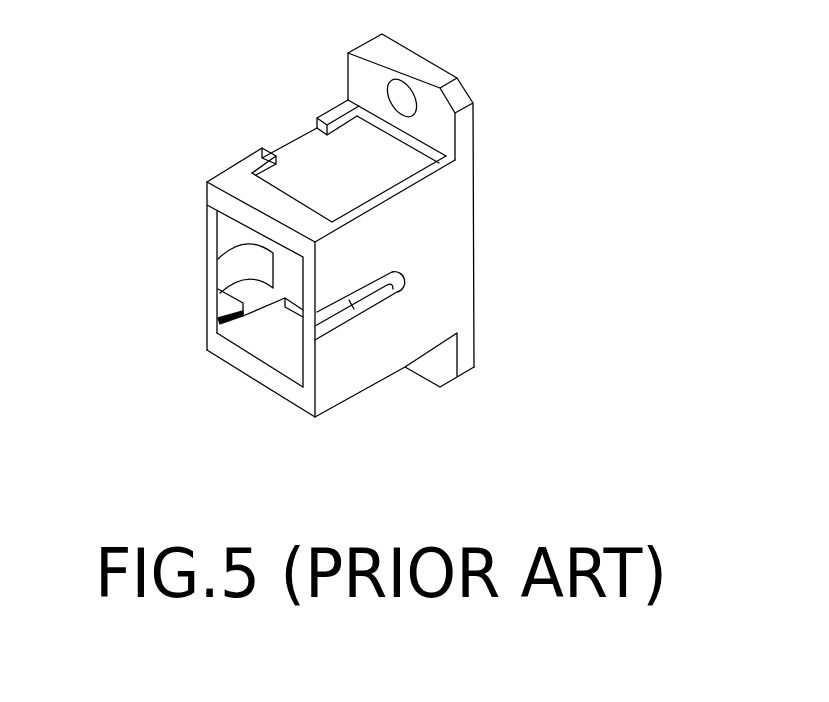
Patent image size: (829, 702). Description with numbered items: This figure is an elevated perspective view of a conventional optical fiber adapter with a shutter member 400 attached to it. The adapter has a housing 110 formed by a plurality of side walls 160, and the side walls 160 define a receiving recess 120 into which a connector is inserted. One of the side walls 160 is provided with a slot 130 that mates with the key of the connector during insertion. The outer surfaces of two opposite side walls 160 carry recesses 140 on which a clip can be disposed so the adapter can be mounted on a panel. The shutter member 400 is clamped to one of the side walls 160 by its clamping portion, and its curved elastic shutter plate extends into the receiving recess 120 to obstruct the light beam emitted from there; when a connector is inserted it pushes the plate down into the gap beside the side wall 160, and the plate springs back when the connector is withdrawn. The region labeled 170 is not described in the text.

The housing 110 is at (190, 153).
The receiving recess 120 is at (288, 334).
The slot 130 is at (372, 293).
The recesses 140 is at (325, 163).
The side walls 160 is at (258, 372).
The top surface 170 is at (293, 142).
The shutter member 400 is at (197, 260).